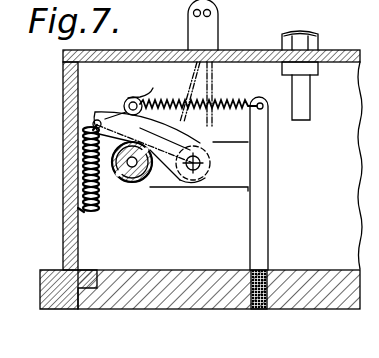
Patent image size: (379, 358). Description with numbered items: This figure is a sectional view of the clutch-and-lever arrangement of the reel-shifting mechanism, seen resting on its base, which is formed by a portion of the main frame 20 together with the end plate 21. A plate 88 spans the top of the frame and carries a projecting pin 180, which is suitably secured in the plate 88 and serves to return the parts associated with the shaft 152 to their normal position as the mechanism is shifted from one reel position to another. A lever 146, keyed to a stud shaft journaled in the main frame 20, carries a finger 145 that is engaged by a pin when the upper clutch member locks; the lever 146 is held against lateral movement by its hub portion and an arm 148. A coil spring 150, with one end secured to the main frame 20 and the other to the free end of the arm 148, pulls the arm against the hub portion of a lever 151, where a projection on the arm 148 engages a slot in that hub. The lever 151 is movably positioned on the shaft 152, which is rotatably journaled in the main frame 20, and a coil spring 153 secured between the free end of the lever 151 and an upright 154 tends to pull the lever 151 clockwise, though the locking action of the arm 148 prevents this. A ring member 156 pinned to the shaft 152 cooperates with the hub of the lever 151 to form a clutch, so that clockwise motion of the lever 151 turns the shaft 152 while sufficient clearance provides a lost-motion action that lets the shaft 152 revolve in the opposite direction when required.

The main frame 20 is at (64, 307).
The end plate 21 is at (178, 306).
The plate 88 is at (342, 53).
The finger 145 is at (204, 10).
The lever 146 is at (188, 26).
The arm 148 is at (178, 203).
The coil spring 150 is at (82, 155).
The lever 151 is at (162, 80).
The shaft 152 is at (134, 183).
The coil spring 153 is at (232, 102).
The upright 154 is at (260, 204).
The ring member 156 is at (127, 183).
The projecting pin 180 is at (350, 99).